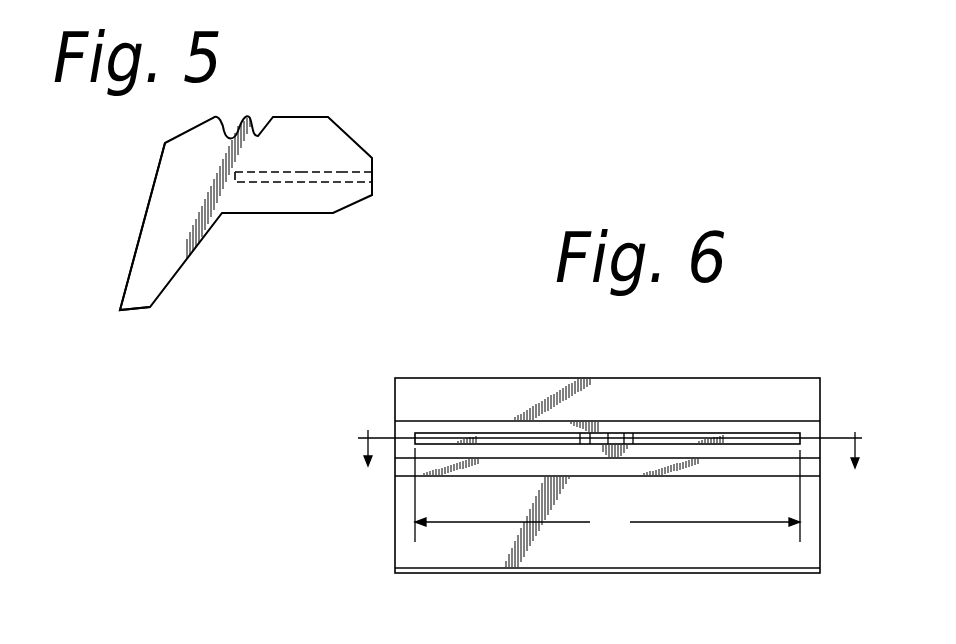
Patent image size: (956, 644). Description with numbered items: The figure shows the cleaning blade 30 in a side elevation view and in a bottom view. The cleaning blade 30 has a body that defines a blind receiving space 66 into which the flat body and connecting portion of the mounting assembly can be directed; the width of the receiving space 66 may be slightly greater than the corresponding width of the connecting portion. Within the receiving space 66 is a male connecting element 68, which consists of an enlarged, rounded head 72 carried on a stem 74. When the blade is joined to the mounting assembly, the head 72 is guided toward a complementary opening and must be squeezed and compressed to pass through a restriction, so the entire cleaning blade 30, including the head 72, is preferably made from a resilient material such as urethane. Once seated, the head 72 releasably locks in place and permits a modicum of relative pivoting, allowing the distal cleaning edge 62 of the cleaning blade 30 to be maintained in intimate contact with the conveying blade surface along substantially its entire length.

In FIG. 5, the cleaning blade 30 is at (160, 262).
In FIG. 6, the cleaning blade 30 is at (395, 543).
In FIG. 5, the distal cleaning edge 62 is at (120, 310).
In FIG. 6, the distal cleaning edge 62 is at (720, 573).
In FIG. 5, the blind receiving space 66 is at (370, 180).
In FIG. 6, the blind receiving space 66 is at (495, 443).
In FIG. 5, the male connecting element 68 is at (332, 170).
In FIG. 6, the male connecting element 68 is at (605, 441).
In FIG. 5, the head 72 is at (350, 172).
In FIG. 6, the head 72 is at (617, 438).
In FIG. 5, the stem 74 is at (278, 171).